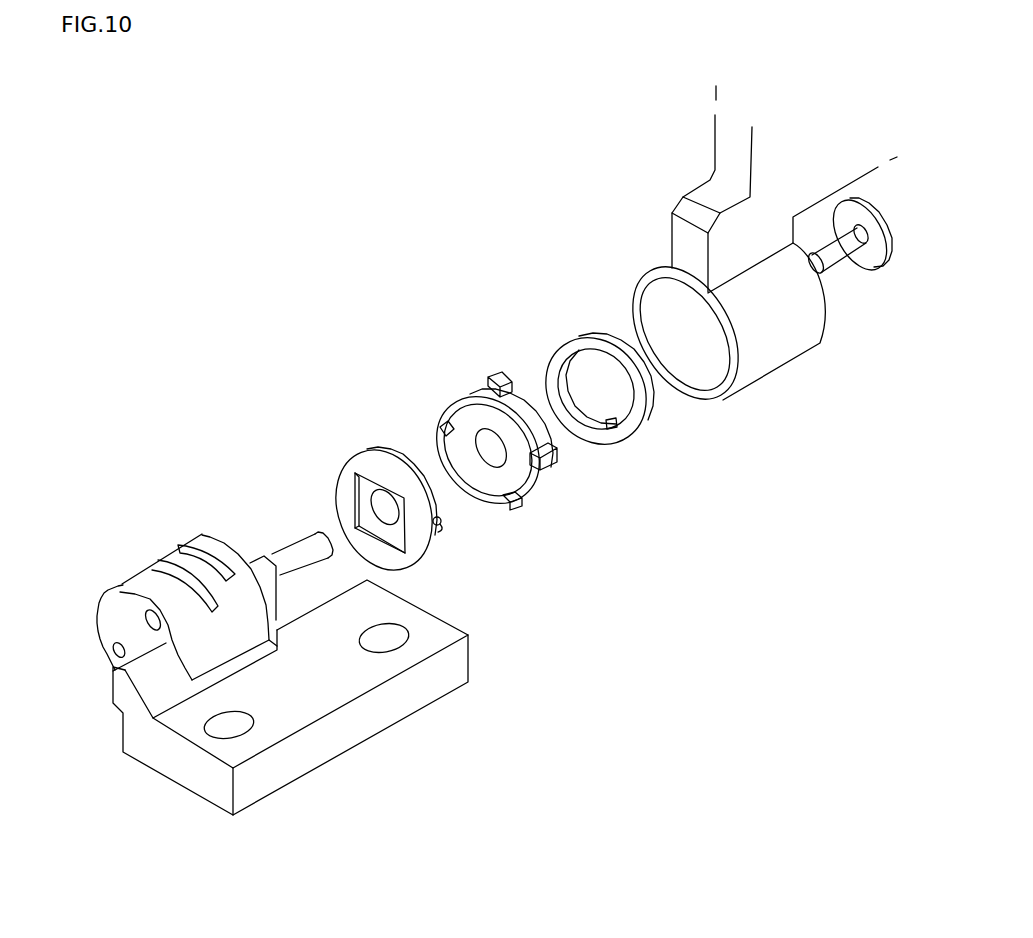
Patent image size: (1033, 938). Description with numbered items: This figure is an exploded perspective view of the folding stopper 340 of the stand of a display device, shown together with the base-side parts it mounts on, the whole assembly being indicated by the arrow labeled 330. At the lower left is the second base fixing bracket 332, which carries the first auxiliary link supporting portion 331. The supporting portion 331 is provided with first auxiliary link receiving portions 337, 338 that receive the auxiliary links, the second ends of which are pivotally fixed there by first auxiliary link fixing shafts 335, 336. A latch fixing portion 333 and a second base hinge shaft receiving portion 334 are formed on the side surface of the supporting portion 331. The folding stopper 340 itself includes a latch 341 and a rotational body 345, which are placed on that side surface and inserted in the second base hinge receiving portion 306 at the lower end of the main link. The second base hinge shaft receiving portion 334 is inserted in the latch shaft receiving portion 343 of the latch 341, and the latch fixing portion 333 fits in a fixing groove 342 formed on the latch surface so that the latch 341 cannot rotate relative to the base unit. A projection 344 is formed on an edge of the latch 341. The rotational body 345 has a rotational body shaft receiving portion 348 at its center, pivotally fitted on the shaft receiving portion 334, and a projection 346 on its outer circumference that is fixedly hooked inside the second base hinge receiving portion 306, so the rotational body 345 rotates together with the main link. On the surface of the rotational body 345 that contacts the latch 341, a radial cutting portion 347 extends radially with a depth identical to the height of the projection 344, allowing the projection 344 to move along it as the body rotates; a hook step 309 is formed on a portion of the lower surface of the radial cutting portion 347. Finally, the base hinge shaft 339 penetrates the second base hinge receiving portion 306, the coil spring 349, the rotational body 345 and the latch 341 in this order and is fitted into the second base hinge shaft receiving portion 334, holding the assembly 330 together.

The second base hinge receiving portion 306 is at (767, 365).
The hook step 309 is at (505, 508).
The hinge assembly 330 is at (97, 713).
The first auxiliary link supporting portion 331 is at (153, 577).
The second base fixing bracket 332 is at (320, 750).
The latch fixing portion 333 is at (260, 573).
The second base hinge shaft receiving portion 334 is at (300, 547).
The first auxiliary link fixing shaft 335 is at (140, 625).
The first auxiliary link fixing shaft 336 is at (113, 655).
The first auxiliary link receiving portion 337 is at (183, 557).
The first auxiliary link receiving portion 338 is at (205, 553).
The base hinge shaft 339 is at (865, 258).
The folding stopper 340 is at (547, 277).
The latch 341 is at (378, 457).
The fixing groove 342 is at (357, 485).
The latch shaft receiving portion 343 is at (380, 505).
The projection 344 is at (440, 518).
The rotational body 345 is at (523, 413).
The projection 346 is at (507, 372).
The radial cutting portion 347 is at (540, 494).
The rotational body shaft receiving portion 348 is at (485, 380).
The coil spring 349 is at (606, 445).